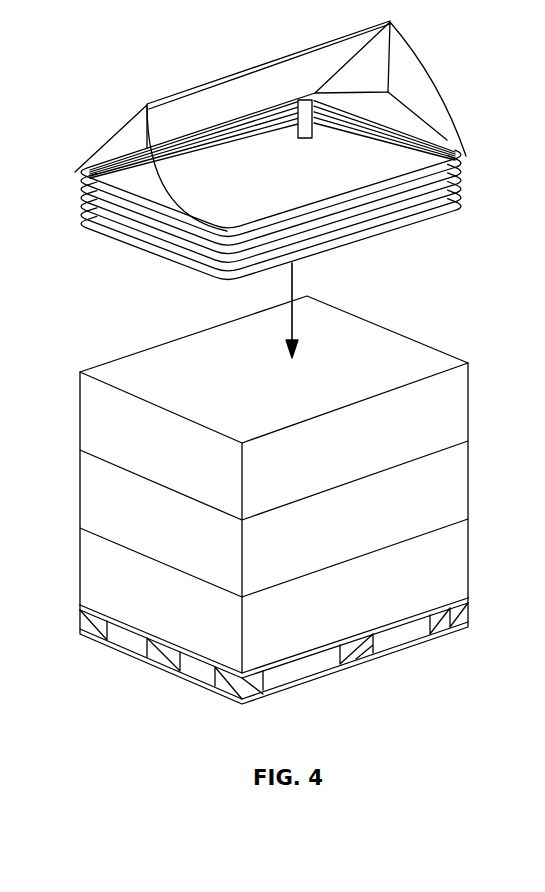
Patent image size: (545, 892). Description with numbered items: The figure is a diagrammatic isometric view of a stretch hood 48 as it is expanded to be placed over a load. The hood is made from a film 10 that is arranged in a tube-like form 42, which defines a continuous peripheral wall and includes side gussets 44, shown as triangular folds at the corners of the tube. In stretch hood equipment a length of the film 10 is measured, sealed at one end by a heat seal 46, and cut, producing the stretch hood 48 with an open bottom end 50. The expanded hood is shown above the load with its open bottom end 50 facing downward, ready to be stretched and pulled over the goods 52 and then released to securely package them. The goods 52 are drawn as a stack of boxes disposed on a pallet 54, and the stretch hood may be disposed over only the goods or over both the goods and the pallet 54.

The film 10 is at (446, 130).
The tube-like form 42 is at (436, 220).
The side gussets 44 is at (146, 132).
The heat seal 46 is at (272, 62).
The stretch hood 48 is at (153, 32).
The open bottom end 50 is at (130, 245).
The goods 52 is at (468, 412).
The pallet 54 is at (469, 608).